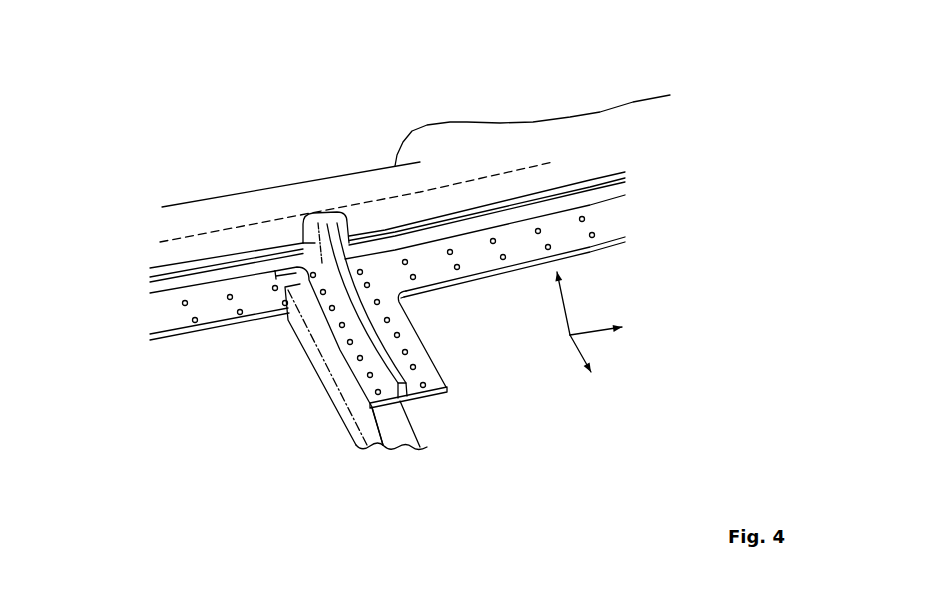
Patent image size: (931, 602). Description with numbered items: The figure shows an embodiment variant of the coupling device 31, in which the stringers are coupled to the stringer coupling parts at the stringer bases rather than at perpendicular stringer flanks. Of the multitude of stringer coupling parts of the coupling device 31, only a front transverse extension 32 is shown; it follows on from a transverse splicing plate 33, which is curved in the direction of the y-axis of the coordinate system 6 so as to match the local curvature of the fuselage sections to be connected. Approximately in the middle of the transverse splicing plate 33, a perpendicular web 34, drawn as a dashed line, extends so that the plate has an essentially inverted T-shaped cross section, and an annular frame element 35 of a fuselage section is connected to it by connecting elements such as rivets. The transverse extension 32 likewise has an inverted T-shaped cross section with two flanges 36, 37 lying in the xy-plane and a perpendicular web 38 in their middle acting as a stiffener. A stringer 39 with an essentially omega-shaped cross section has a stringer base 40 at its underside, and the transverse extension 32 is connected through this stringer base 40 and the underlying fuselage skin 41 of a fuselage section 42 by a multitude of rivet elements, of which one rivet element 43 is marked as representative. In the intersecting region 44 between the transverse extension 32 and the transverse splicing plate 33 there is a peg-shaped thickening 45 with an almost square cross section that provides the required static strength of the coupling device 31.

The coupling device 31 is at (347, 107).
The transverse extension 32 is at (437, 320).
The transverse splicing plate 33 is at (613, 216).
The perpendicular web 34 is at (590, 165).
The annular frame element 35 is at (544, 126).
The flange 36 is at (387, 393).
The flange 37 is at (432, 385).
The perpendicular web 38 is at (372, 320).
The stringer 39 is at (353, 393).
The stringer base 40 is at (407, 433).
The fuselage skin 41 is at (215, 416).
The fuselage section 42 is at (193, 357).
The rivet element 43 is at (416, 368).
The intersecting region 44 is at (297, 258).
The peg-shaped thickening 45 is at (323, 214).
The coordinate system 6 is at (570, 335).